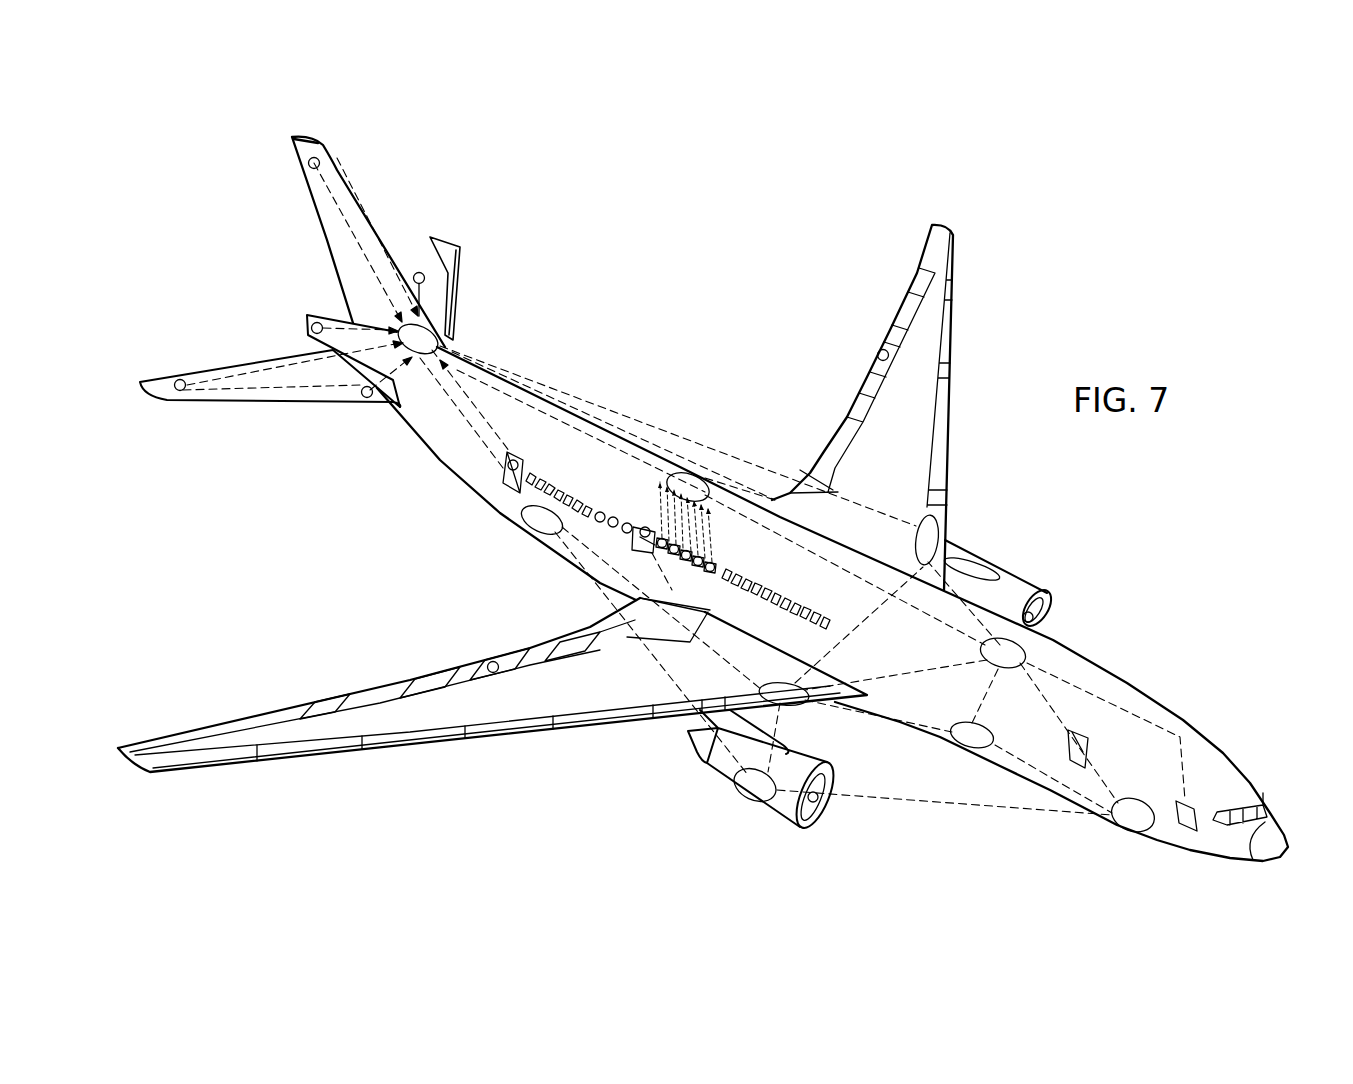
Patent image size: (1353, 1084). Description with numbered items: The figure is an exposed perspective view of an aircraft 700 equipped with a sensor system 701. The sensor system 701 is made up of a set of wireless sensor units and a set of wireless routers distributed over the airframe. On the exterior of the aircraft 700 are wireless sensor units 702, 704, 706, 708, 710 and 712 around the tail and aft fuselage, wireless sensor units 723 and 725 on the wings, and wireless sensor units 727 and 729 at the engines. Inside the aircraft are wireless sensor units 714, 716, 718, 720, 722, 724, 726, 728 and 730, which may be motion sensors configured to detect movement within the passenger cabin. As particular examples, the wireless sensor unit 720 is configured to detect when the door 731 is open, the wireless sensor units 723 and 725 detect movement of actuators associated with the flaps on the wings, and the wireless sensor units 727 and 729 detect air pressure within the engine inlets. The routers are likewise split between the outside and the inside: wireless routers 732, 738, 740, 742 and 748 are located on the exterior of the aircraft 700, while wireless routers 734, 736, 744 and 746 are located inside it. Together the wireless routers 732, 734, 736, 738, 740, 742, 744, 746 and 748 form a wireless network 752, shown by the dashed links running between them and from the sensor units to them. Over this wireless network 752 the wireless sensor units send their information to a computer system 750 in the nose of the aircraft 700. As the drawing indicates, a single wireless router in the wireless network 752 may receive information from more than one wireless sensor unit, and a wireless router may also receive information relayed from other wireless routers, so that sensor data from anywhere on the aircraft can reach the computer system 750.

The aircraft 700 is at (1250, 708).
The sensor system 701 is at (327, 160).
The wireless sensor unit 702 is at (308, 163).
The wireless sensor unit 704 is at (415, 274).
The wireless sensor unit 706 is at (179, 390).
The wireless sensor unit 708 is at (312, 326).
The wireless sensor unit 710 is at (365, 397).
The wireless sensor unit 712 is at (507, 466).
The wireless sensor unit 714 is at (573, 492).
The wireless sensor unit 716 is at (613, 516).
The wireless sensor unit 718 is at (640, 525).
The wireless sensor unit 720 is at (648, 548).
The wireless sensor unit 722 is at (656, 545).
The wireless sensor unit 723 is at (488, 664).
The wireless sensor unit 724 is at (682, 600).
The wireless sensor unit 725 is at (880, 350).
The wireless sensor unit 726 is at (620, 630).
The wireless sensor unit 727 is at (823, 817).
The wireless sensor unit 728 is at (770, 490).
The wireless sensor unit 729 is at (1035, 598).
The wireless sensor unit 730 is at (733, 578).
The door 731 is at (657, 520).
The wireless router 732 is at (437, 333).
The wireless router 734 is at (519, 520).
The wireless router 736 is at (703, 478).
The wireless router 738 is at (748, 798).
The wireless router 740 is at (760, 686).
The wireless router 742 is at (918, 520).
The wireless router 744 is at (1027, 656).
The wireless router 746 is at (955, 743).
The wireless router 748 is at (1150, 835).
The computer system 750 is at (1198, 832).
The wireless network 752 is at (519, 450).